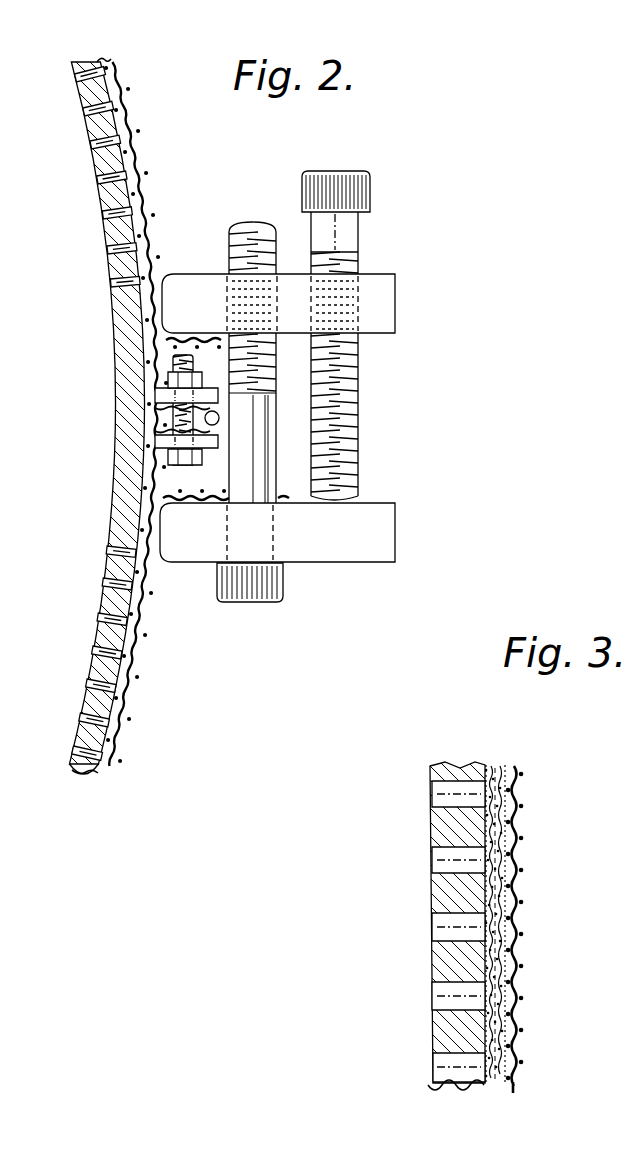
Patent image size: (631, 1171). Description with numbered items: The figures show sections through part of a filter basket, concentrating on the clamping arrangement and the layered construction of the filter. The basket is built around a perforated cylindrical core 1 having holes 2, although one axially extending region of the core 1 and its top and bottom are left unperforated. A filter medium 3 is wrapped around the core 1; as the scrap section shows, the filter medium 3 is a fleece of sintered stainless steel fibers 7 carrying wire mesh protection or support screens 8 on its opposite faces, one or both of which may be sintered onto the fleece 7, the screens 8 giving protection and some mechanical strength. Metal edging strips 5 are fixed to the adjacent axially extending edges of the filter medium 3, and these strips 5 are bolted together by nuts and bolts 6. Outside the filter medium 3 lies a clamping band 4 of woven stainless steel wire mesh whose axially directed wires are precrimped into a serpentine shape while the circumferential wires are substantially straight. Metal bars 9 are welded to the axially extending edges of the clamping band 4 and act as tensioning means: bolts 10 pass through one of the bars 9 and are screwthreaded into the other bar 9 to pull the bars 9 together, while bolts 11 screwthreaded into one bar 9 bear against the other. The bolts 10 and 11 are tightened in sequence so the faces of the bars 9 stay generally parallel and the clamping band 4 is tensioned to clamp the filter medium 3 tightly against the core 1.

In FIG. 2, the perforated cylindrical core 1 is at (122, 500).
In FIG. 3, the perforated cylindrical core 1 is at (447, 895).
In FIG. 2, the holes 2 is at (103, 617).
In FIG. 3, the holes 2 is at (433, 858).
In FIG. 2, the filter medium 3 is at (98, 60).
In FIG. 3, the filter medium 3 is at (489, 1106).
In FIG. 2, the clamping band 4 is at (136, 168).
In FIG. 3, the clamping band 4 is at (523, 803).
In FIG. 2, the metal edging strips 5 is at (153, 440).
In FIG. 2, the nuts and bolts 6 is at (173, 373).
In FIG. 3, the fleece of sintered stainless steel fibers 7 is at (500, 767).
In FIG. 3, the wire mesh protection or support screens 8 is at (491, 765).
In FIG. 2, the metal bars 9 is at (383, 292).
In FIG. 2, the bolts 10 is at (277, 587).
In FIG. 2, the bolts 11 is at (350, 190).